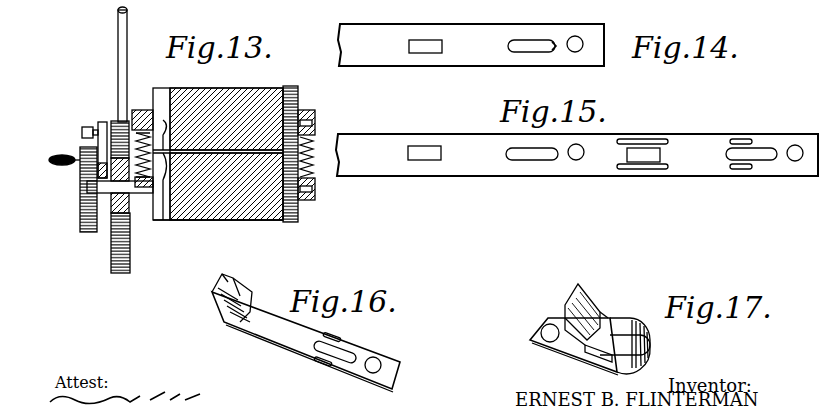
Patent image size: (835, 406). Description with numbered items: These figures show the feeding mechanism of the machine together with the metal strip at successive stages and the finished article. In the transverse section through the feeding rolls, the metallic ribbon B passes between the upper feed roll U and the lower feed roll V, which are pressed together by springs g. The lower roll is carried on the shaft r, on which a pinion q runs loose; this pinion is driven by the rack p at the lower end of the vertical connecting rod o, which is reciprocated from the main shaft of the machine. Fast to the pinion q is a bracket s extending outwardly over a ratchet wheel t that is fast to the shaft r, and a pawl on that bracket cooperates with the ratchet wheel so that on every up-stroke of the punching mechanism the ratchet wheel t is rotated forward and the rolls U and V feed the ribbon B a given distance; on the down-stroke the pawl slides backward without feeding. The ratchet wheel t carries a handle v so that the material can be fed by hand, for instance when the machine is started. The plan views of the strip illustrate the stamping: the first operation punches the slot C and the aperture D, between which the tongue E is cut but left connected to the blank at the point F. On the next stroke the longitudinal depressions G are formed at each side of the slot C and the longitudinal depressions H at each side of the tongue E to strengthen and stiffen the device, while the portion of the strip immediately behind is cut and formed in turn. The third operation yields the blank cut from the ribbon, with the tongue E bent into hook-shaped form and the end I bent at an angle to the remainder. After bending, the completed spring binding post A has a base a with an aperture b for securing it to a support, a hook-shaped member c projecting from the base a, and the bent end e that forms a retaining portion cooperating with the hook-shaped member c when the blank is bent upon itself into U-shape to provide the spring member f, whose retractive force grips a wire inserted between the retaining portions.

In FIG. 13, the vertical connecting rod o is at (117, 56).
In FIG. 13, the bracket s is at (102, 122).
In FIG. 13, the screw w is at (82, 132).
In FIG. 13, the handle v is at (49, 160).
In FIG. 13, the ratchet wheel t is at (87, 190).
In FIG. 13, the shaft r is at (92, 232).
In FIG. 13, the rack p is at (111, 268).
In FIG. 13, the pinion q is at (131, 208).
In FIG. 13, the lower feed roll V is at (222, 216).
In FIG. 13, the upper feed roll U is at (250, 97).
In FIG. 13, the springs g is at (316, 182).
In FIG. 14, the metallic ribbon B is at (386, 56).
In FIG. 14, the slot C is at (434, 48).
In FIG. 15, the slot C is at (636, 150).
In FIG. 16, the slot C is at (216, 314).
In FIG. 14, the aperture D is at (578, 42).
In FIG. 15, the aperture D is at (577, 160).
In FIG. 16, the aperture D is at (380, 364).
In FIG. 14, the tongue E is at (532, 50).
In FIG. 15, the tongue E is at (532, 160).
In FIG. 16, the tongue E is at (340, 368).
In FIG. 14, the connecting point F is at (554, 48).
In FIG. 15, the longitudinal depressions G is at (660, 139).
In FIG. 16, the longitudinal depressions G is at (240, 290).
In FIG. 15, the longitudinal depressions H is at (742, 139).
In FIG. 16, the longitudinal depressions H is at (340, 340).
In FIG. 16, the end I is at (207, 297).
In FIG. 17, the spring binding post A is at (598, 302).
In FIG. 17, the base a is at (585, 356).
In FIG. 17, the aperture b is at (530, 338).
In FIG. 17, the hook-shaped member c is at (566, 304).
In FIG. 17, the end e is at (582, 290).
In FIG. 17, the spring member f is at (612, 320).